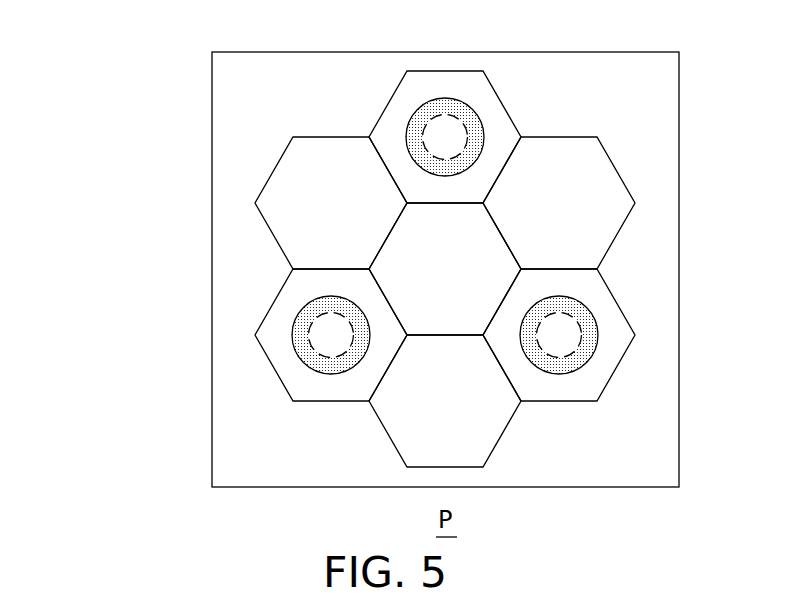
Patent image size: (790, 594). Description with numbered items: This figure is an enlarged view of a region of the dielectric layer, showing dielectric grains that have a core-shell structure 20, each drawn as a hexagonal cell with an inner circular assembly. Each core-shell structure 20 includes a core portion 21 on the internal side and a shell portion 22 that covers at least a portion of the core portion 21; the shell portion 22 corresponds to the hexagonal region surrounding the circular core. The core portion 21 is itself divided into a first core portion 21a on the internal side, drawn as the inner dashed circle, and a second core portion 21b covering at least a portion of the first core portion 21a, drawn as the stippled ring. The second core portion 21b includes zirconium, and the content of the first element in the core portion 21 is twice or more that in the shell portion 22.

The core-shell structure 20 is at (341, 269).
The core portion 21 is at (347, 236).
The first core portion 21a is at (318, 332).
The second core portion 21b is at (300, 350).
The shell portion 22 is at (293, 381).